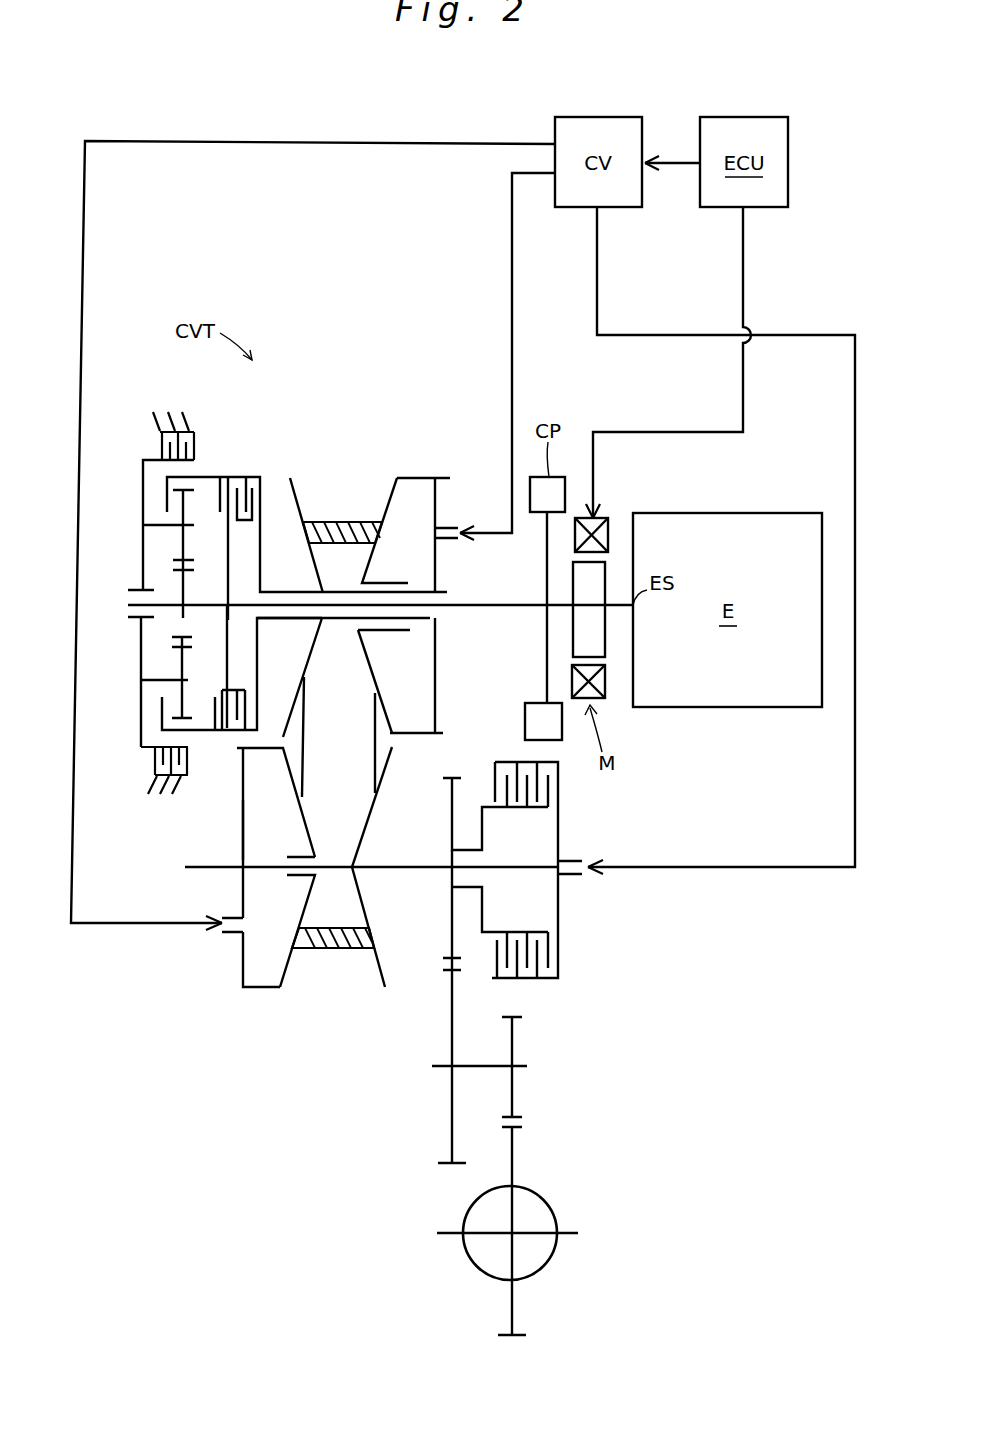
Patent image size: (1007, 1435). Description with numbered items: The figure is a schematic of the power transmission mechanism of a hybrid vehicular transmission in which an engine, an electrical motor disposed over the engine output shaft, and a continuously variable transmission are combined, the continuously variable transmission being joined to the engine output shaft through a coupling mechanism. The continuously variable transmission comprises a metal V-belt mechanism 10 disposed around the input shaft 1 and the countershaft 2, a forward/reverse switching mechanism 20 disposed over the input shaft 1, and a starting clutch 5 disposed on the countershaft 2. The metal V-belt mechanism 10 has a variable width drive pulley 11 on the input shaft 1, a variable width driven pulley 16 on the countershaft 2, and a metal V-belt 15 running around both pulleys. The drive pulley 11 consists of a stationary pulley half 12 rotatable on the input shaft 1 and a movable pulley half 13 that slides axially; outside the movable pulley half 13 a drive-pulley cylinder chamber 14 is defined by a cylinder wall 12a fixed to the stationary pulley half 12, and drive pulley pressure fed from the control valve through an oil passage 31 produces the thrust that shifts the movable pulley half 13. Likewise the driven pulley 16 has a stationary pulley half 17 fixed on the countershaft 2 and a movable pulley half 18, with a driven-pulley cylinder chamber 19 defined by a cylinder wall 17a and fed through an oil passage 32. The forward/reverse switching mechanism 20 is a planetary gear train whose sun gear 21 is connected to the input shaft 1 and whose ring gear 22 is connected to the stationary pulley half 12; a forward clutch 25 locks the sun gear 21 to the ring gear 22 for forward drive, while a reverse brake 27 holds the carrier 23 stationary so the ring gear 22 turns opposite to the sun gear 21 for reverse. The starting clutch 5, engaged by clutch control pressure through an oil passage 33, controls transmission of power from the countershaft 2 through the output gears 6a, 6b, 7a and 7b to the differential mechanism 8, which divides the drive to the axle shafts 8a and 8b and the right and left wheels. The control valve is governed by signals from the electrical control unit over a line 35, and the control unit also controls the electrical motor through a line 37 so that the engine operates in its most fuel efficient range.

The input shaft 1 is at (500, 607).
The countershaft 2 is at (410, 869).
The starting clutch 5 is at (570, 954).
The gear 6a is at (452, 810).
The gear 6b is at (438, 1164).
The gear 7a is at (513, 1043).
The gear 7b is at (513, 1160).
The differential mechanism 8 is at (466, 1266).
The axle shaft 8a is at (446, 1233).
The axle shaft 8b is at (568, 1230).
The metal V-belt mechanism 10 is at (396, 420).
The variable width drive pulley 11 is at (415, 478).
The stationary pulley half 12 is at (304, 490).
The cylinder wall 12a is at (436, 568).
The movable pulley half 13 is at (384, 490).
The drive-pulley cylinder chamber 14 is at (391, 549).
The metal V-belt 15 is at (377, 735).
The variable width driven pulley 16 is at (296, 992).
The stationary pulley half 17 is at (374, 985).
The cylinder wall 17a is at (243, 830).
The movable pulley half 18 is at (300, 967).
The driven-pulley cylinder chamber 19 is at (263, 846).
The forward/reverse switching mechanism 20 is at (146, 408).
The sun gear 21 is at (183, 585).
The ring gear 22 is at (163, 730).
The carrier 23 is at (143, 496).
The forward clutch 25 is at (240, 477).
The reverse brake 27 is at (160, 442).
The oil passage 31 is at (513, 264).
The oil passage 32 is at (315, 140).
The oil passage 33 is at (838, 335).
The line 35 is at (670, 160).
The line 37 is at (744, 268).